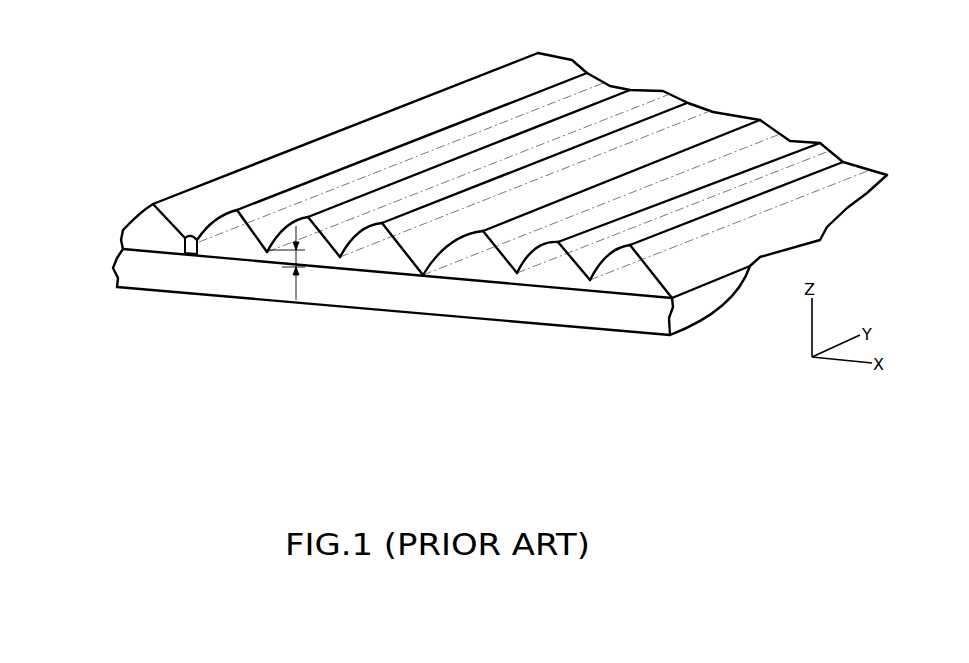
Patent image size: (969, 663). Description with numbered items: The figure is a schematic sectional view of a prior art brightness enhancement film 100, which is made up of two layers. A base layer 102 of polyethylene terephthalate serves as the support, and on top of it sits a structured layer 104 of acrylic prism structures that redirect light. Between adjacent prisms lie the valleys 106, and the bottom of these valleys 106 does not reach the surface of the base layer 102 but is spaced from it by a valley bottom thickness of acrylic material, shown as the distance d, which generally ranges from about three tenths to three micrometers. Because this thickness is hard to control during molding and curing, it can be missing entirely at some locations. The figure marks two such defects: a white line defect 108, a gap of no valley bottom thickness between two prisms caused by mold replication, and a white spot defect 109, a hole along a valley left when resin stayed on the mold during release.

The brightness enhancement film 100 is at (453, 197).
The base layer 102 is at (107, 268).
The structured layer 104 is at (435, 110).
The valleys 106 is at (263, 257).
The white line defect 108 is at (428, 275).
The white spot defect 109 is at (183, 256).